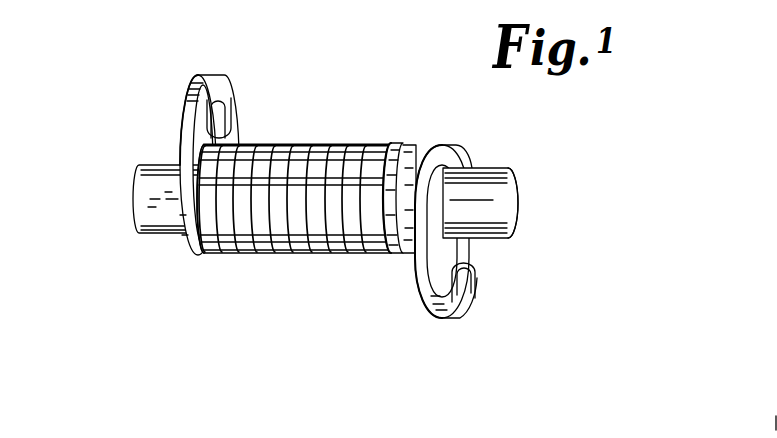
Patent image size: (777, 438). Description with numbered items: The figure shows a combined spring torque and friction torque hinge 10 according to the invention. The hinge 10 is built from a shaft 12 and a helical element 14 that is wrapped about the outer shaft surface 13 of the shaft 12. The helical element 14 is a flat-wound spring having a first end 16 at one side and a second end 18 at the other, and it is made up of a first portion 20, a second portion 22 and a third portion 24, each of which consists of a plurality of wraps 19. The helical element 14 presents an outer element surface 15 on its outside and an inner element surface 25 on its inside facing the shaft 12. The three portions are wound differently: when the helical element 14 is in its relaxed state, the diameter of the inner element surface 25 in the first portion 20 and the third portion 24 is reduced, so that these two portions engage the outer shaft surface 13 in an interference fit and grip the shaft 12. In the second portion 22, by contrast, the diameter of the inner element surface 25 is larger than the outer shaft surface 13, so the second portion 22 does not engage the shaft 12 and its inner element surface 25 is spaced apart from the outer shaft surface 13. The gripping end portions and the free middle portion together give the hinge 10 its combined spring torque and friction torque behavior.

The combined spring torque and friction torque hinge 10 is at (122, 203).
The shaft 12 is at (510, 200).
The outer shaft surface 13 is at (477, 197).
The helical element 14 is at (293, 208).
The outer element surface 15 is at (185, 200).
The first end 16 is at (193, 75).
The second end 18 is at (452, 318).
The wraps 19 is at (242, 140).
The first portion 20 is at (216, 251).
The second portion 22 is at (325, 255).
The third portion 24 is at (413, 254).
The inner element surface 25 is at (440, 250).